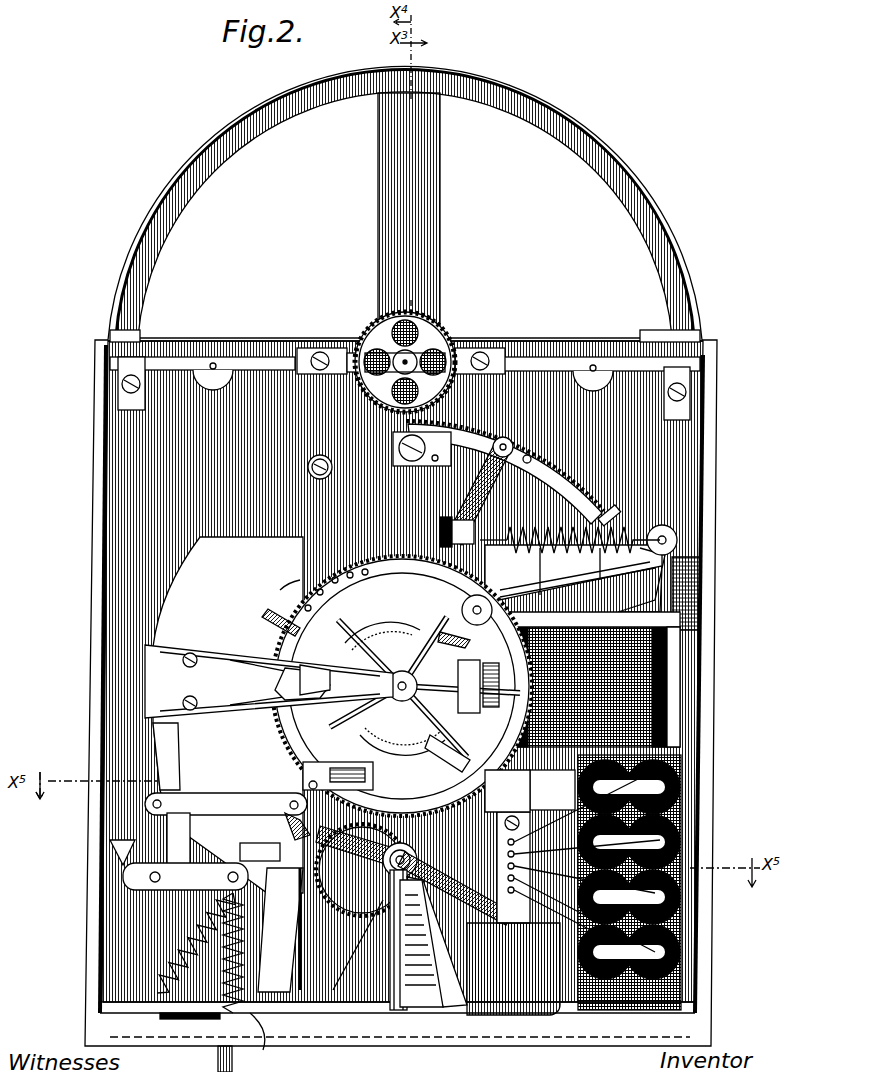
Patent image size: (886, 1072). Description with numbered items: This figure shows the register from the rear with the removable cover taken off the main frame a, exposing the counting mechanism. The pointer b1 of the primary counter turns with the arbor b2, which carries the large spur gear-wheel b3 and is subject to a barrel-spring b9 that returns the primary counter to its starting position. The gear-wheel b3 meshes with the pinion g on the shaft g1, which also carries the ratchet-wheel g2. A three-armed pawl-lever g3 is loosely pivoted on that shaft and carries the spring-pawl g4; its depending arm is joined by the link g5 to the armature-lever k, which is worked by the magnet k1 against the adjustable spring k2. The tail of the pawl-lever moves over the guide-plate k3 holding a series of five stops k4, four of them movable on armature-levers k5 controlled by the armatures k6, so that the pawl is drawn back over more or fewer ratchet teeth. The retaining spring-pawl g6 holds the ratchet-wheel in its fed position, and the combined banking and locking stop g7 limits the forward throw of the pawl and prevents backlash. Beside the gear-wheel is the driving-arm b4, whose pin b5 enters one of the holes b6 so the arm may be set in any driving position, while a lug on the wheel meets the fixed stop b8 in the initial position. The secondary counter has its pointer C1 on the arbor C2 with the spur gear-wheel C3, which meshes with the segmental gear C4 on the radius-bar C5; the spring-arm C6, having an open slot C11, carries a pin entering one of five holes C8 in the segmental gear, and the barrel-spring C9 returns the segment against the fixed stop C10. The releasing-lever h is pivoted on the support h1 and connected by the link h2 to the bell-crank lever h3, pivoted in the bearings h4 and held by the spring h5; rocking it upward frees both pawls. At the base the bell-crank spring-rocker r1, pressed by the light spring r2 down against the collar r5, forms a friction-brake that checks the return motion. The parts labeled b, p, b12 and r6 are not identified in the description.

The main frame a is at (103, 473).
The pointer of the secondary counter C1 is at (477, 607).
The arbor C2 is at (412, 360).
The spur gear-wheel C3 is at (365, 335).
The segmental gear C4 is at (580, 493).
The radius-bar C5 is at (455, 520).
The spring-arm C6 is at (470, 472).
The holes C8 is at (515, 455).
The barrel-spring C9 is at (435, 335).
The fixed stop C10 is at (612, 519).
The open slot C11 is at (316, 477).
The plate b is at (300, 547).
The pointer b1 is at (380, 630).
The arbor b2 is at (404, 686).
The spur gear-wheel b3 is at (315, 667).
The driving-arm b4 is at (270, 628).
The pin b5 is at (345, 622).
The holes b6 is at (283, 592).
The fixed stop b8 is at (355, 548).
The barrel-spring b9 is at (478, 686).
The arm b12 is at (454, 641).
The lever bar p is at (269, 681).
The releasing-lever h is at (288, 825).
The support h1 is at (199, 756).
The link h2 is at (200, 793).
The bell-crank lever h3 is at (192, 848).
The bearings h4 is at (125, 872).
The spring h5 is at (160, 960).
The pinion g is at (442, 910).
The shaft g1 is at (385, 915).
The ratchet-wheel g2 is at (361, 873).
The pawl-lever g3 is at (405, 843).
The spring-pawl g4 is at (280, 930).
The link g5 is at (480, 905).
The retaining spring-pawl g6 is at (441, 753).
The banking and locking stop g7 is at (303, 778).
The armature-lever k is at (462, 856).
The magnet k1 is at (672, 667).
The spring k2 is at (560, 553).
The guide-plate k3 is at (552, 790).
The stops k4 is at (500, 860).
The armature-levers k5 is at (513, 969).
The armatures k6 is at (672, 830).
The bell-crank spring-rocker r1 is at (259, 854).
The light spring r2 is at (263, 1042).
The collar r5 is at (212, 1018).
The post r6 is at (203, 1059).